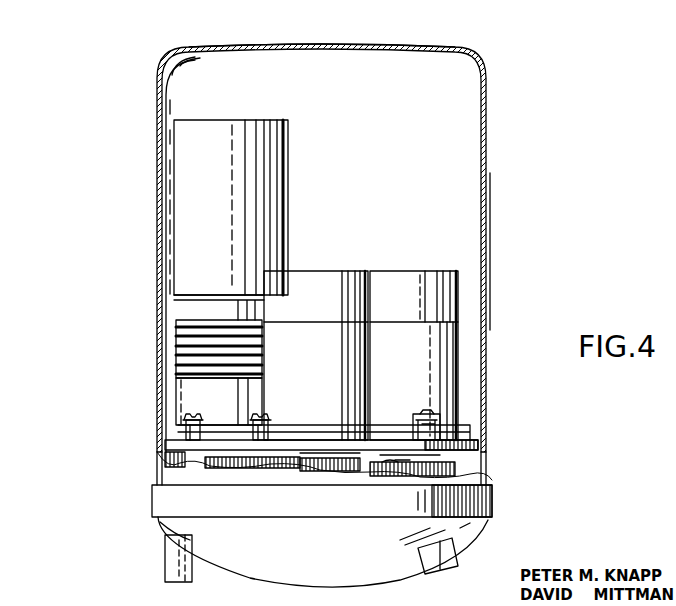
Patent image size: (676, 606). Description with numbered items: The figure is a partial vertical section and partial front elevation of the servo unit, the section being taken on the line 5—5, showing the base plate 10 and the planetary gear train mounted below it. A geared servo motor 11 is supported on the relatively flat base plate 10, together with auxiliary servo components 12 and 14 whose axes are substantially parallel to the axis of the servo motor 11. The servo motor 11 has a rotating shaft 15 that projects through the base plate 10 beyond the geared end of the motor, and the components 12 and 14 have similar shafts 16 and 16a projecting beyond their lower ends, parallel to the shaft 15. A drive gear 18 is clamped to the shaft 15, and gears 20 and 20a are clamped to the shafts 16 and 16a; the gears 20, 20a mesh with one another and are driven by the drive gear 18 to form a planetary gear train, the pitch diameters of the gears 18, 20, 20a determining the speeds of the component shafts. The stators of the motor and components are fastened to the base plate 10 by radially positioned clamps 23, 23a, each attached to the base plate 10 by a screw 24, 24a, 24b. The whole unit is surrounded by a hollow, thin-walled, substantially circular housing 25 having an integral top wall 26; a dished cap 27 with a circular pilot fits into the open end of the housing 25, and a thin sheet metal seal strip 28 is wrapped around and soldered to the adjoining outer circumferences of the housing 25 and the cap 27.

The section line 5- 5 is at (115, 308).
The base plate 10 is at (471, 440).
The geared servo motor 11 is at (279, 182).
The auxiliary servo component 12 is at (310, 278).
The auxiliary servo component 14 is at (384, 277).
The rotating shaft 15 is at (252, 471).
The shaft 16 is at (330, 472).
The shaft 16a is at (380, 476).
The drive gear 18 is at (193, 468).
The gear 20 is at (298, 476).
The gear 20a is at (402, 472).
The clamp 23 is at (200, 430).
The clamp 23a is at (270, 433).
The screw 24 is at (190, 416).
The screw 24a is at (262, 416).
The screw 24b is at (421, 414).
The housing 25 is at (489, 154).
The top wall 26 is at (412, 47).
The dished cap 27 is at (354, 570).
The seal strip 28 is at (494, 502).